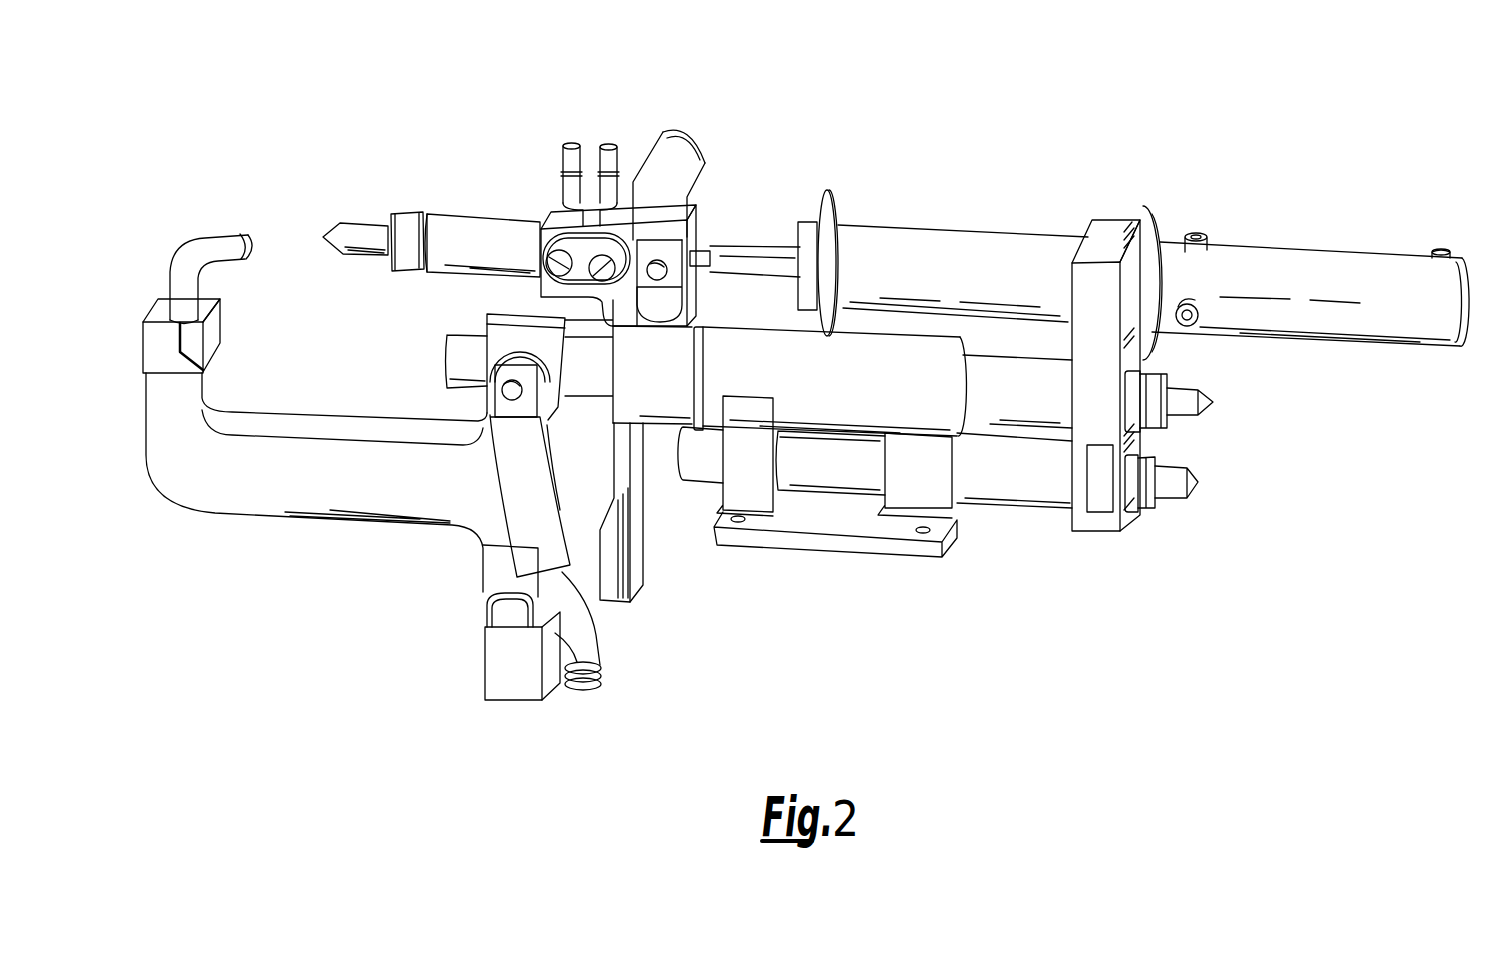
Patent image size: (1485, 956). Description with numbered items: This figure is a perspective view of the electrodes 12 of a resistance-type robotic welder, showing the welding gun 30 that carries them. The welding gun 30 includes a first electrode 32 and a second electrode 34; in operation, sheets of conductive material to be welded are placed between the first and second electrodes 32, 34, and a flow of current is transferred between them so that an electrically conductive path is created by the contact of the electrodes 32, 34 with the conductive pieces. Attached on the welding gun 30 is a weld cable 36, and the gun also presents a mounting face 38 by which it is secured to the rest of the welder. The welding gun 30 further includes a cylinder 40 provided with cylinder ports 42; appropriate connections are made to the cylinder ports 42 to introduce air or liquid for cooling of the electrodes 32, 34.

The electrodes 12 is at (283, 203).
The welding gun 30 is at (531, 694).
The first electrode 32 is at (200, 240).
The second electrode 34 is at (356, 230).
The weld cable 36 is at (661, 140).
The mounting face 38 is at (643, 578).
The cylinder 40 is at (1356, 258).
The cylinder ports 42 is at (1198, 302).